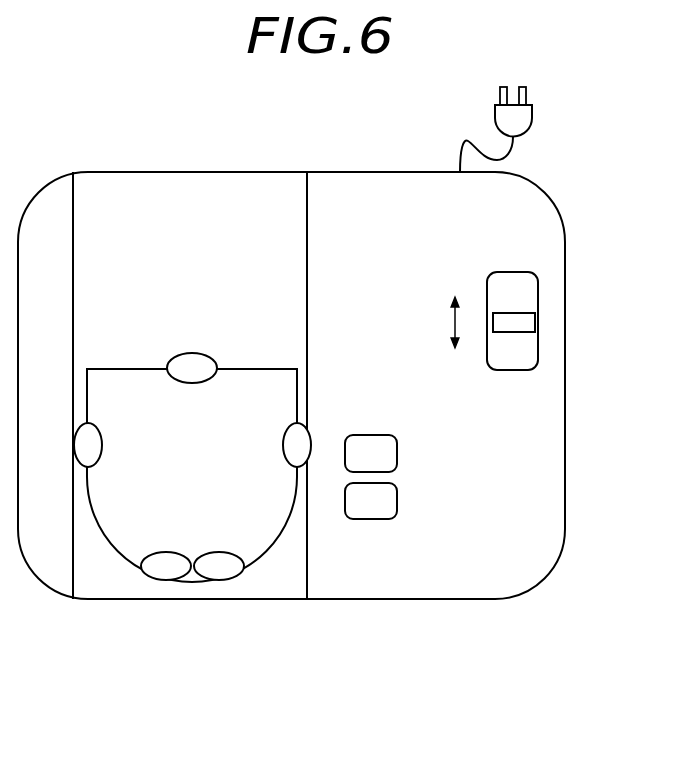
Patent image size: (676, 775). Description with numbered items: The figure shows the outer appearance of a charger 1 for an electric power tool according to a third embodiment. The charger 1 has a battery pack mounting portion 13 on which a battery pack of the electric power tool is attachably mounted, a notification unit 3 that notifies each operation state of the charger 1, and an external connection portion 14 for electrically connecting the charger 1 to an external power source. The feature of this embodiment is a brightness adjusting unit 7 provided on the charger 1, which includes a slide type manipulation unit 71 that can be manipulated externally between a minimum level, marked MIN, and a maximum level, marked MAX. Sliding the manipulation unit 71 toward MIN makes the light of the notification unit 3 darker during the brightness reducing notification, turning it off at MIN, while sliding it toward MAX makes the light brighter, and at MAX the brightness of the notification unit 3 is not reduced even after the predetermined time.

The charger 1 is at (162, 186).
The battery pack mounting portion 13 is at (123, 543).
The notification unit 3 is at (400, 476).
The brightness adjusting unit 7 is at (517, 269).
The manipulation unit 71 is at (533, 325).
The external connection portion 14 is at (533, 117).